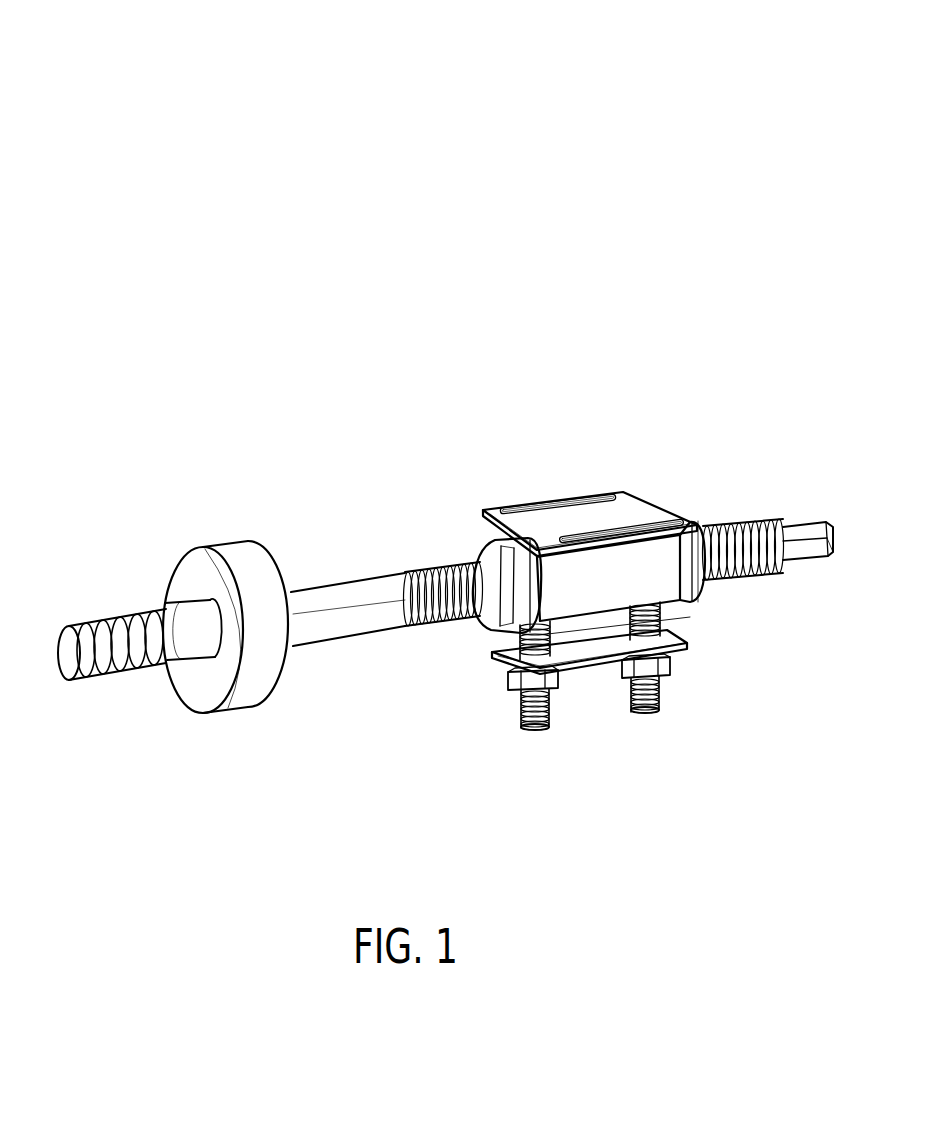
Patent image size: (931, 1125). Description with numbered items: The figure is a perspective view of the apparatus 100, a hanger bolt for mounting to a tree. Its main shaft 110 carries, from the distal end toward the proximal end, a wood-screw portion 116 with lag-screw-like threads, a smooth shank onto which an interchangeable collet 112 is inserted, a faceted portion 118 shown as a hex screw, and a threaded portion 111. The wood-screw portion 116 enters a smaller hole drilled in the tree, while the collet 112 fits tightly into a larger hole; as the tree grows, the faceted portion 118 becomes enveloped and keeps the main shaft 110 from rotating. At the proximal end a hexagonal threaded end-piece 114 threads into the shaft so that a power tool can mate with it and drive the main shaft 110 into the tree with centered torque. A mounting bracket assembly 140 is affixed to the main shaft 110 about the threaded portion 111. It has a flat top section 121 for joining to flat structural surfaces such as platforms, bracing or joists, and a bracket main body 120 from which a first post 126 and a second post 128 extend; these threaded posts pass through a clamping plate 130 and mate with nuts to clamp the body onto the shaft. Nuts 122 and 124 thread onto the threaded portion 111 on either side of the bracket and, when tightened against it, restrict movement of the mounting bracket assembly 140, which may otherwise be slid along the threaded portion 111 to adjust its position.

The apparatus 100 is at (100, 53).
The main shaft 110 is at (433, 512).
The threaded portion 111 is at (757, 535).
The collet 112 is at (198, 570).
The hexagonal threaded end-piece 114 is at (822, 535).
The wood-screw portion 116 is at (82, 622).
The faceted portion 118 is at (350, 592).
The bracket main body 120 is at (652, 580).
The flat top section 121 is at (545, 525).
The nut 122 is at (700, 556).
The nut 124 is at (523, 590).
The first post 126 is at (528, 715).
The second post 128 is at (647, 683).
The clamping plate 130 is at (597, 647).
The mounting bracket assembly 140 is at (593, 463).